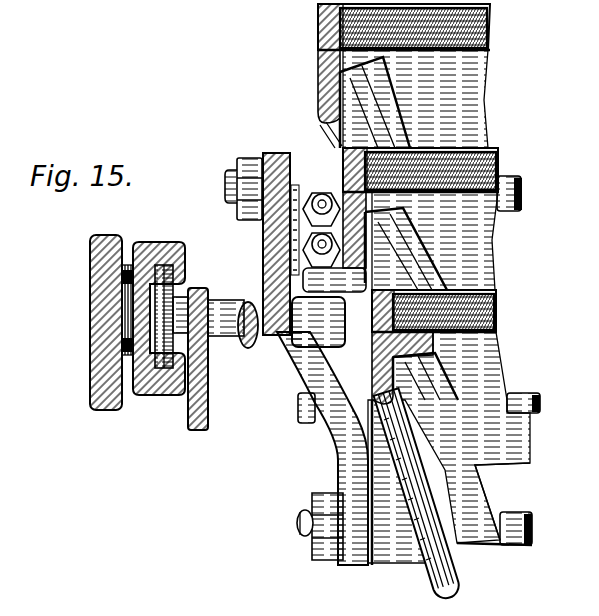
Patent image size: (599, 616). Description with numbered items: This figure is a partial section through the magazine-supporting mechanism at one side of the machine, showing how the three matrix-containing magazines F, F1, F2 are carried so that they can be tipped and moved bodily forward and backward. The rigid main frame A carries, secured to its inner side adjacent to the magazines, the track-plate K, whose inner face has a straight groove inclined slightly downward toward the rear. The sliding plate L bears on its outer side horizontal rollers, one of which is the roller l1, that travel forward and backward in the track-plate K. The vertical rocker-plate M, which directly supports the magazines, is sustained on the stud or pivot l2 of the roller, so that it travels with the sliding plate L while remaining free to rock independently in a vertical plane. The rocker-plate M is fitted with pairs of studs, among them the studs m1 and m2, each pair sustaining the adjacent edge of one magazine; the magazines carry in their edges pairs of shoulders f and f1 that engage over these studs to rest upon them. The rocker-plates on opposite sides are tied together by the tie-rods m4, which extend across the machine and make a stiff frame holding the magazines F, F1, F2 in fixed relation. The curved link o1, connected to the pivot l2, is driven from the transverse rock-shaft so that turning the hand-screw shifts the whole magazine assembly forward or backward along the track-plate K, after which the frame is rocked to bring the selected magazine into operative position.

The upper magazine F2 is at (460, 60).
The magazine F1 is at (475, 260).
The magazine F is at (477, 350).
The tie-rods m4 is at (500, 180).
The rocker-plate M is at (310, 380).
The shoulder f1 is at (393, 470).
The stud m2 is at (290, 217).
The stud m1 is at (303, 243).
The shoulder f is at (325, 236).
The curved link o1 is at (253, 347).
The sliding plate L is at (193, 430).
The track-plate K is at (147, 392).
The roller l1 is at (163, 305).
The stud or pivot l2 is at (187, 322).
The main frame A is at (90, 330).